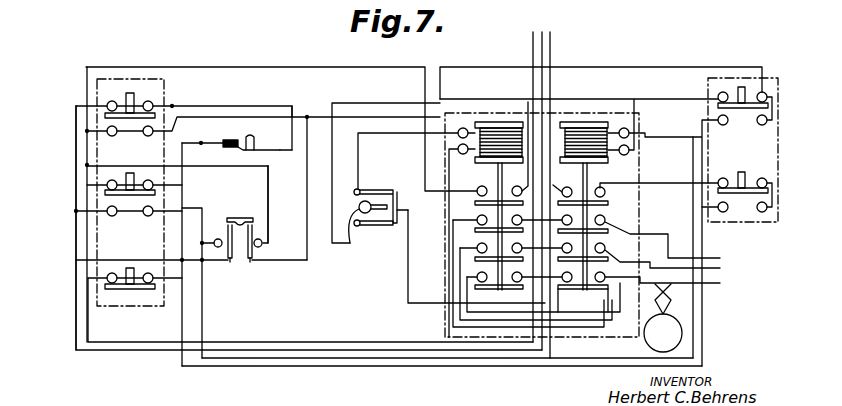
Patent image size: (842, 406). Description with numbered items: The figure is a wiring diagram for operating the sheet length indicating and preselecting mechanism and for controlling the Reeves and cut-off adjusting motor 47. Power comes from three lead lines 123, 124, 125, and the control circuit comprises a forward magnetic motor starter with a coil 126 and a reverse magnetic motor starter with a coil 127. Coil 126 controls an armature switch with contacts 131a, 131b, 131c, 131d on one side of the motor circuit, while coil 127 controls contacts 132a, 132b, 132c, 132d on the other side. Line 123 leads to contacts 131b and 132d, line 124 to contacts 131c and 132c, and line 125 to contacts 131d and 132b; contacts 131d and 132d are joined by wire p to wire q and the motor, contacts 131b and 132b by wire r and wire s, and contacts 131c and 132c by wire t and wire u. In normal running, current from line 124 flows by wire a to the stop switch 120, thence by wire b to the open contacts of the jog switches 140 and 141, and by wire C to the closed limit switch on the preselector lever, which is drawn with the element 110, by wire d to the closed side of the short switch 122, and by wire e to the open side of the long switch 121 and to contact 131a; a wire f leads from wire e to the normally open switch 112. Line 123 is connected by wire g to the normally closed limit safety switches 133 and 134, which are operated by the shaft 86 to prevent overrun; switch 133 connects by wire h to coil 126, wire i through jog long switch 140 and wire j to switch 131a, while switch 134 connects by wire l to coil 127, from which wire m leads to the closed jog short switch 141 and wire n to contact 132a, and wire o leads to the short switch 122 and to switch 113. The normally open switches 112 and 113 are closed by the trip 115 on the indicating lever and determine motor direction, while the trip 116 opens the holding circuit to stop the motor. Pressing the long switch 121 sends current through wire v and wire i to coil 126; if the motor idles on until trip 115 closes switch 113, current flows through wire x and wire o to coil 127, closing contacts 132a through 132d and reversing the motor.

The motor 47 is at (663, 318).
The shaft 86 is at (347, 245).
The resistor 110 is at (226, 140).
The limit switch 112 is at (230, 262).
The limit switch 113 is at (250, 262).
The trip 115 is at (239, 218).
The trip 116 is at (254, 138).
The stop switch 120 is at (130, 289).
The long switch 121 is at (130, 195).
The short switch 122 is at (130, 118).
The power line 123 is at (531, 48).
The power line 124 is at (541, 32).
The power line 125 is at (552, 48).
The coil 126 is at (590, 123).
The coil 127 is at (497, 123).
The contact 131a is at (608, 203).
The contact 131b is at (605, 222).
The contact 131c is at (605, 249).
The contact 131d is at (571, 290).
The contact 132a is at (488, 153).
The contact 132b is at (475, 230).
The contact 132c is at (475, 259).
The contact 132d is at (475, 287).
The limit safety switch 133 is at (392, 226).
The limit safety switch 134 is at (382, 190).
The jog long switch 140 is at (752, 182).
The jog short switch 141 is at (745, 108).
The wire a is at (322, 341).
The wire b is at (256, 367).
The wire C is at (184, 190).
The wire d is at (258, 105).
The wire e is at (75, 229).
The wire f is at (110, 259).
The wire g is at (400, 303).
The wire h is at (370, 103).
The wire i is at (668, 136).
The wire j is at (668, 182).
The wire l is at (380, 138).
The wire m is at (660, 66).
The wire n is at (676, 98).
The wire o is at (321, 116).
The wire p is at (572, 338).
The wire q is at (668, 284).
The wire r is at (595, 338).
The wire s is at (667, 263).
The wire t is at (617, 338).
The wire u is at (668, 240).
The wire v is at (306, 359).
The wire x is at (270, 190).